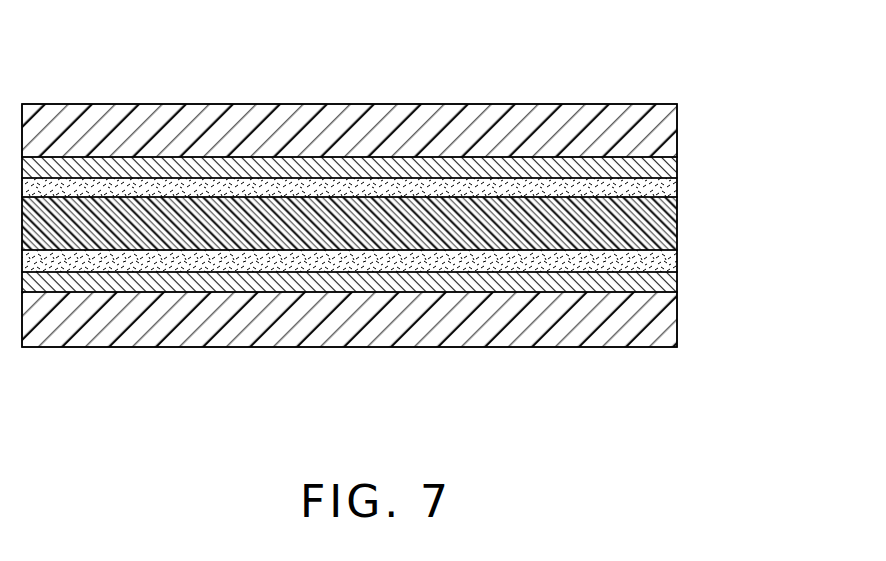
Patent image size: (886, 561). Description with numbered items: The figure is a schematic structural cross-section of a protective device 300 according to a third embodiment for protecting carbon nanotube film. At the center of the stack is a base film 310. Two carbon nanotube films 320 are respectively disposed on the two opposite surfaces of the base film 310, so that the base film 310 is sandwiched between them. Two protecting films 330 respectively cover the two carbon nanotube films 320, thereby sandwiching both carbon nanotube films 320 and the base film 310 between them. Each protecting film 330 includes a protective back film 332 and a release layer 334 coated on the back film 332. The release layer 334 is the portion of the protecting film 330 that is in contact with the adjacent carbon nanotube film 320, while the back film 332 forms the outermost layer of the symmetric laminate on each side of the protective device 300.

The protective device 300 is at (388, 68).
The base film 310 is at (676, 217).
The carbon nanotube film 320 is at (676, 188).
The protecting film 330 is at (794, 92).
The protective back film 332 is at (643, 127).
The release layer 334 is at (668, 166).